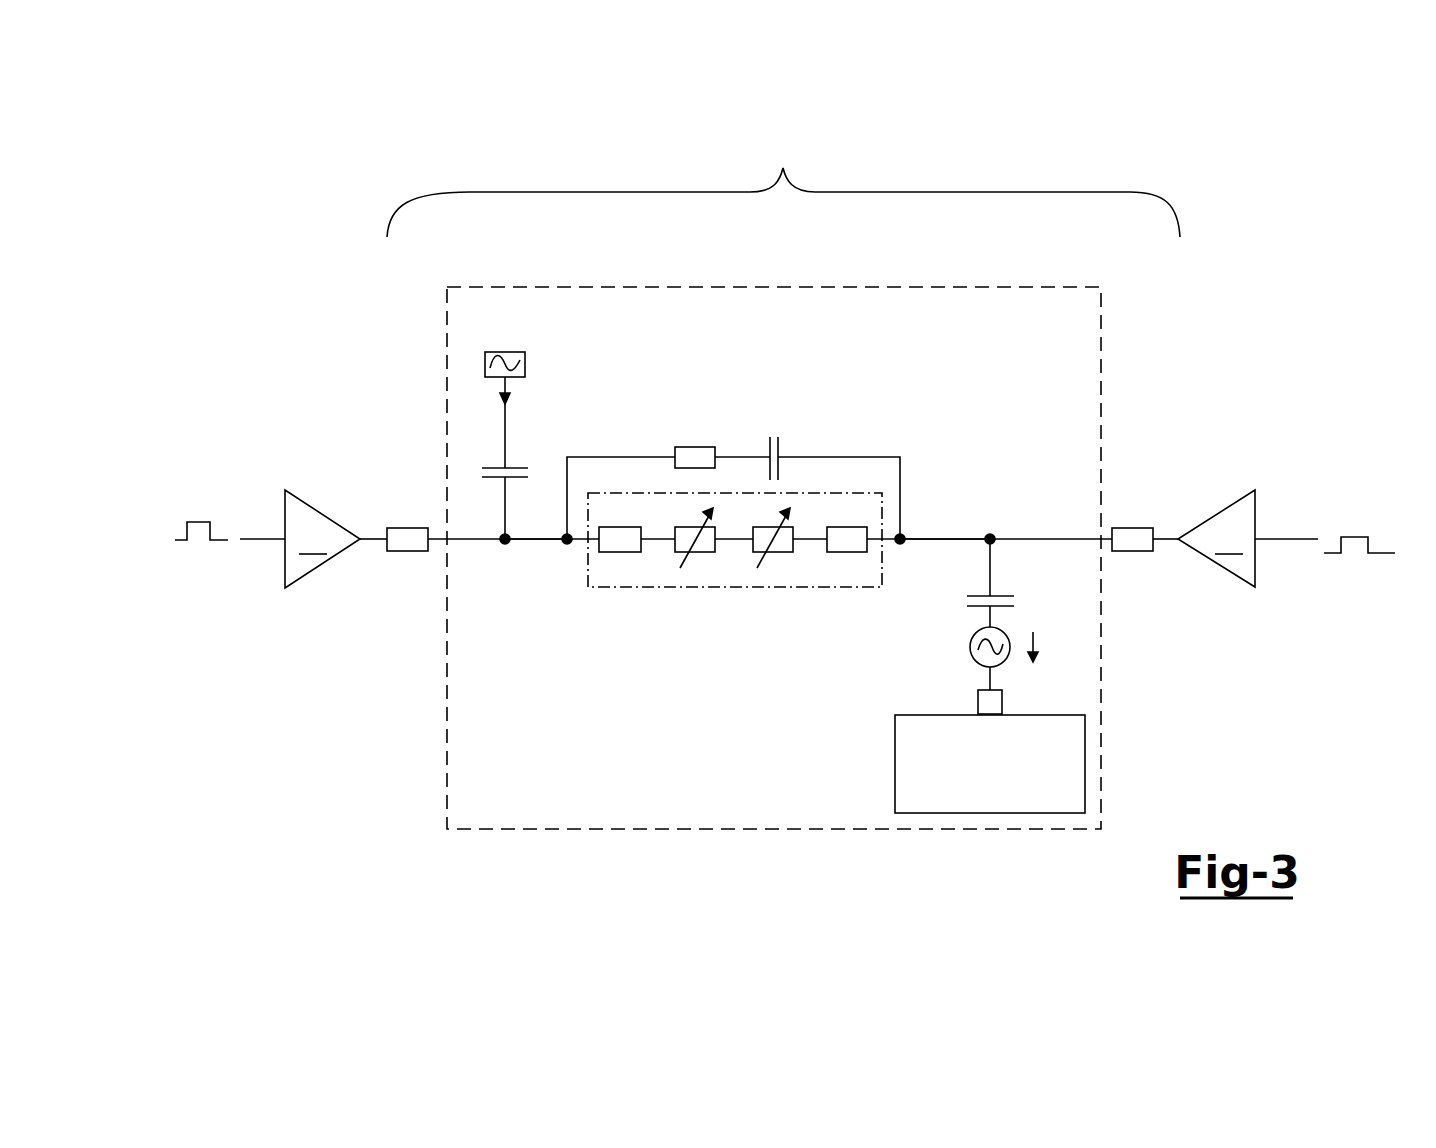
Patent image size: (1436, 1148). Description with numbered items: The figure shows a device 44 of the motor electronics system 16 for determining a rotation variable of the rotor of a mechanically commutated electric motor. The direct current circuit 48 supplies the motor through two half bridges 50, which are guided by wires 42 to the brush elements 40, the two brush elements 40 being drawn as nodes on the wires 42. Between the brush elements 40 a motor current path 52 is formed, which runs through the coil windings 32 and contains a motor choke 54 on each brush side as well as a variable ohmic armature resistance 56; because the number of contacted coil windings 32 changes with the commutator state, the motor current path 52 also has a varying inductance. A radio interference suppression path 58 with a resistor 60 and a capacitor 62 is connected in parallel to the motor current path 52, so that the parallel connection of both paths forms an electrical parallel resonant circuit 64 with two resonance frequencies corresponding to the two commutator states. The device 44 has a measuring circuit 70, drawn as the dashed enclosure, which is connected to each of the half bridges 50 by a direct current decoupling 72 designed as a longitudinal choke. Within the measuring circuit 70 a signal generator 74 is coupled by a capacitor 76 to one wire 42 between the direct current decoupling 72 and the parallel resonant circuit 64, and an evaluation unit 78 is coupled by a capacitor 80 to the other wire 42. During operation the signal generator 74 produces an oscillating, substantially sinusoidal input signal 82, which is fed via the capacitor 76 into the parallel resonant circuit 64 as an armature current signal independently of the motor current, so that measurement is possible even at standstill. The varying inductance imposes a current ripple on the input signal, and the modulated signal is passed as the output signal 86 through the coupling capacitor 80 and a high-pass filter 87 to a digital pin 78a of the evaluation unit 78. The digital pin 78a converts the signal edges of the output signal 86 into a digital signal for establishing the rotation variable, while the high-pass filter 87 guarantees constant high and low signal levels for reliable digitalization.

The motor electronics system 16 is at (1260, 245).
The coil windings 32 is at (783, 553).
The brush elements 40 is at (567, 545).
The wires 42 is at (531, 541).
The device 44 is at (783, 168).
The direct current circuit 48 is at (252, 470).
The half bridges 50 is at (770, 539).
The motor current path 52 is at (740, 588).
The motor choke 54 is at (622, 553).
The variable ohmic armature resistance 56 is at (706, 553).
The radio interference suppression path 58 is at (854, 457).
The resistor 60 is at (695, 447).
The capacitor 62 is at (778, 444).
The parallel resonant circuit 64 is at (924, 412).
The measuring circuit 70 is at (615, 830).
The direct current decoupling 72 is at (408, 552).
The signal generator 74 is at (525, 365).
The capacitor 76 is at (515, 469).
The evaluation unit 78 is at (975, 791).
The digital pin 78a is at (1002, 697).
The capacitor 80 is at (1000, 596).
The input signal 82 is at (508, 390).
The output signal 86 is at (1038, 643).
The high-pass filter 87 is at (970, 647).